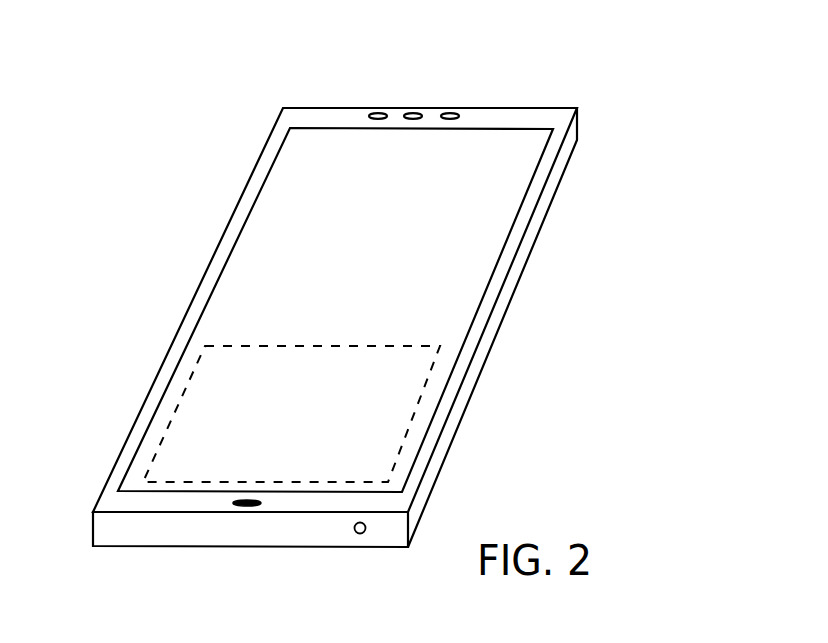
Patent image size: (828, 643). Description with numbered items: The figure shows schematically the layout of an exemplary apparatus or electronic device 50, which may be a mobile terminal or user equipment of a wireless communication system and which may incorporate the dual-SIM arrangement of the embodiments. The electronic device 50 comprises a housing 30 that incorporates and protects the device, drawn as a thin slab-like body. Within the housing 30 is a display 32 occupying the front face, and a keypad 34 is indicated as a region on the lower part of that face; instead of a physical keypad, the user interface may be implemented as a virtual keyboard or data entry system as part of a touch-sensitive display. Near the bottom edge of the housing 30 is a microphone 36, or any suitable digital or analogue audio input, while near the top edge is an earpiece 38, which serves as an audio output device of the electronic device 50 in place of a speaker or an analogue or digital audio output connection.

The housing 30 is at (302, 107).
The display 32 is at (475, 236).
The keypad 34 is at (395, 432).
The microphone 36 is at (253, 505).
The earpiece 38 is at (413, 114).
The electronic device 50 is at (608, 67).